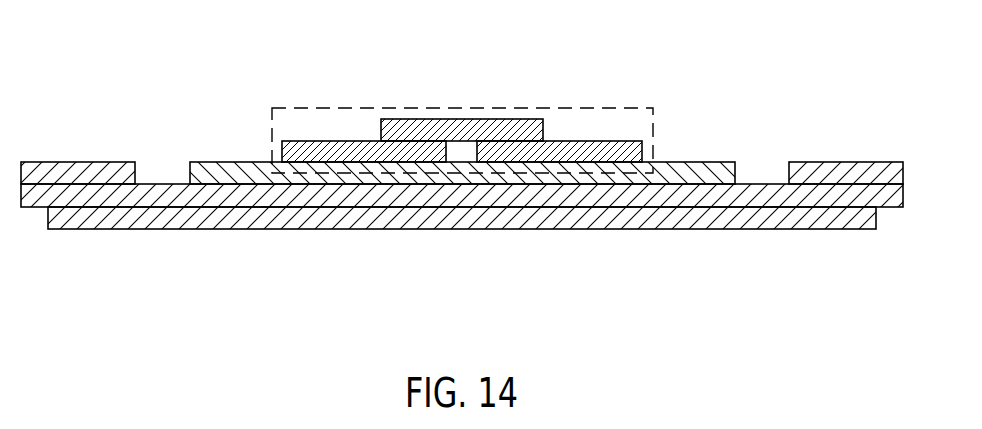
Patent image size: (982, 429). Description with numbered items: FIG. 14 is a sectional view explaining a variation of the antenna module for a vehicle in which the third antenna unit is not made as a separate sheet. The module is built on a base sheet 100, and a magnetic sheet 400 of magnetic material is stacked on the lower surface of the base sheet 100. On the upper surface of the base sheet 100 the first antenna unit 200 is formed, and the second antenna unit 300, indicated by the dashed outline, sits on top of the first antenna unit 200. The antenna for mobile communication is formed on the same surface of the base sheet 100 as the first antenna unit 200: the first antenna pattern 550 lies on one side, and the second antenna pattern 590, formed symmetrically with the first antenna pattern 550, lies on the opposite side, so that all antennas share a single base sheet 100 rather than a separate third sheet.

The base sheet 100 is at (295, 193).
The first antenna unit 200 is at (695, 162).
The second antenna unit 300 is at (563, 108).
The magnetic sheet 400 is at (427, 230).
The first antenna pattern 550 is at (68, 162).
The second antenna pattern 590 is at (828, 162).